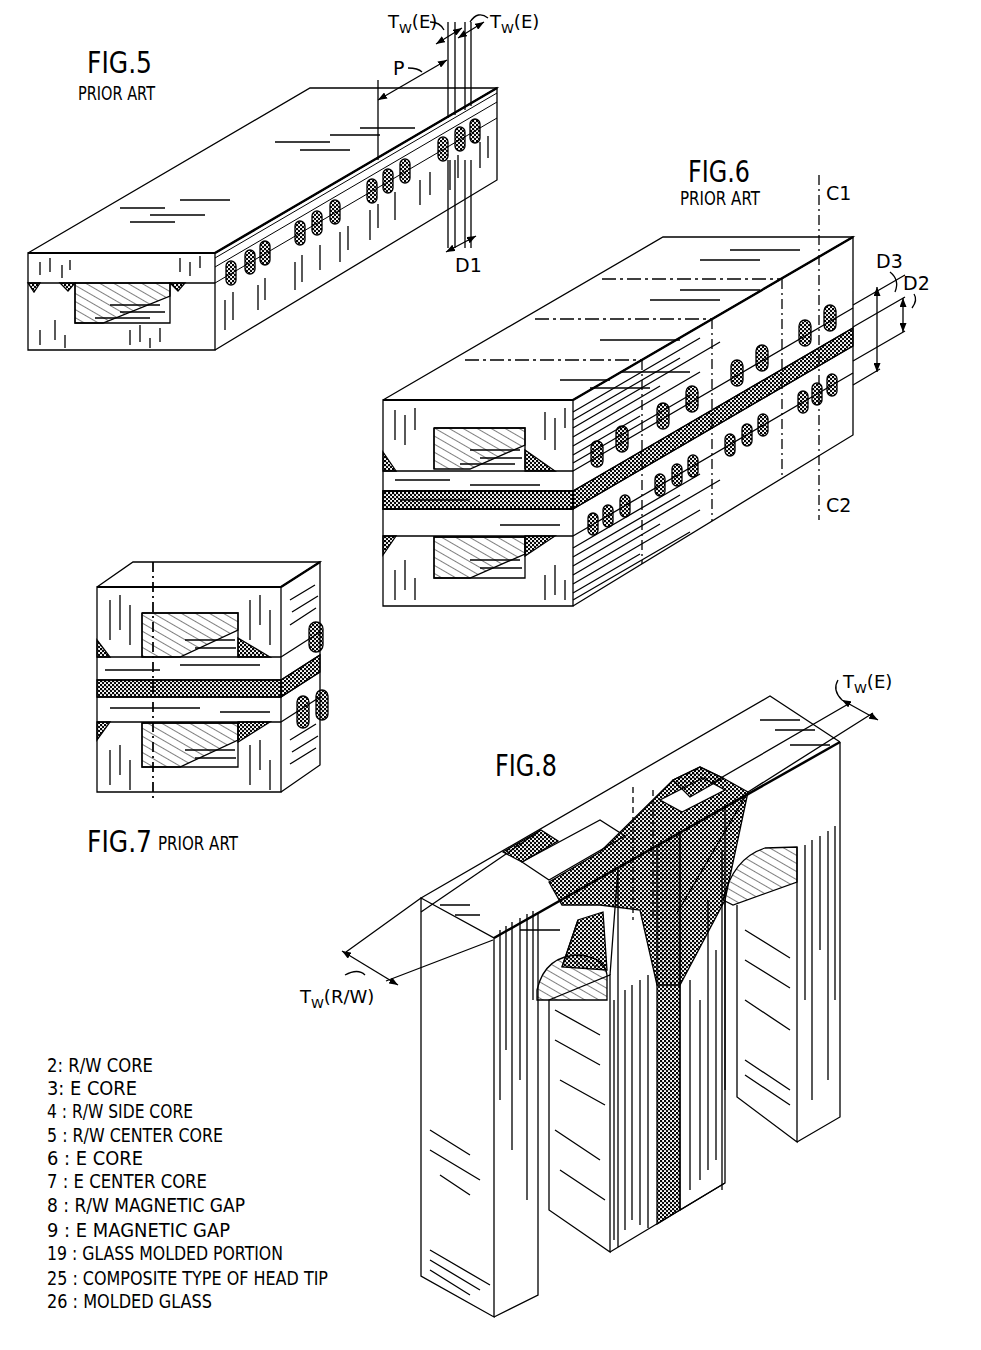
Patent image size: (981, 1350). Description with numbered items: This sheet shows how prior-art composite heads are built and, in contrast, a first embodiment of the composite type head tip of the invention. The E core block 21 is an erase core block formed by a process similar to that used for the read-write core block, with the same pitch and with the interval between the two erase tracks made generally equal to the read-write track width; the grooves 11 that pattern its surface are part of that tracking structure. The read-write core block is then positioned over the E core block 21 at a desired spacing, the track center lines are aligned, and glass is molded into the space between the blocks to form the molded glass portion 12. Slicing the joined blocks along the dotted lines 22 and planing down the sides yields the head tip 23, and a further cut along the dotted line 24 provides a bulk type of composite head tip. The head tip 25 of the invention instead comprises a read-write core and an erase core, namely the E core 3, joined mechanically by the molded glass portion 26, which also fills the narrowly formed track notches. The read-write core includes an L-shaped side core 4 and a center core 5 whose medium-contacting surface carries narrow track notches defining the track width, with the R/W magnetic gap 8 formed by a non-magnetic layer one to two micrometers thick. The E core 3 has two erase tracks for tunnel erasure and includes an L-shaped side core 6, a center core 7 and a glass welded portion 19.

In FIG. 5, the track grooves 11 is at (353, 209).
In FIG. 5, the E core block 21 is at (258, 262).
In FIG. 6, the E core block 21 is at (604, 582).
In FIG. 6, the dotted lines 22 is at (465, 360).
In FIG. 6, the molded glass portion 12 is at (385, 498).
In FIG. 7, the head tip 23 is at (272, 567).
In FIG. 7, the dotted line 24 is at (158, 572).
In FIG. 8, the head core (E core) 3 is at (722, 742).
In FIG. 8, the L-shaped side core 4 is at (518, 1283).
In FIG. 8, the center core 5 is at (630, 1222).
In FIG. 8, the L-shaped side core 6 is at (830, 1120).
In FIG. 8, the center core 7 is at (708, 1183).
In FIG. 8, the R/W magnetic gap 8 is at (578, 855).
In FIG. 8, the glass welded portion 19 is at (747, 847).
In FIG. 8, the head tip 25 is at (653, 1013).
In FIG. 8, the molded glass portion 26 is at (645, 800).